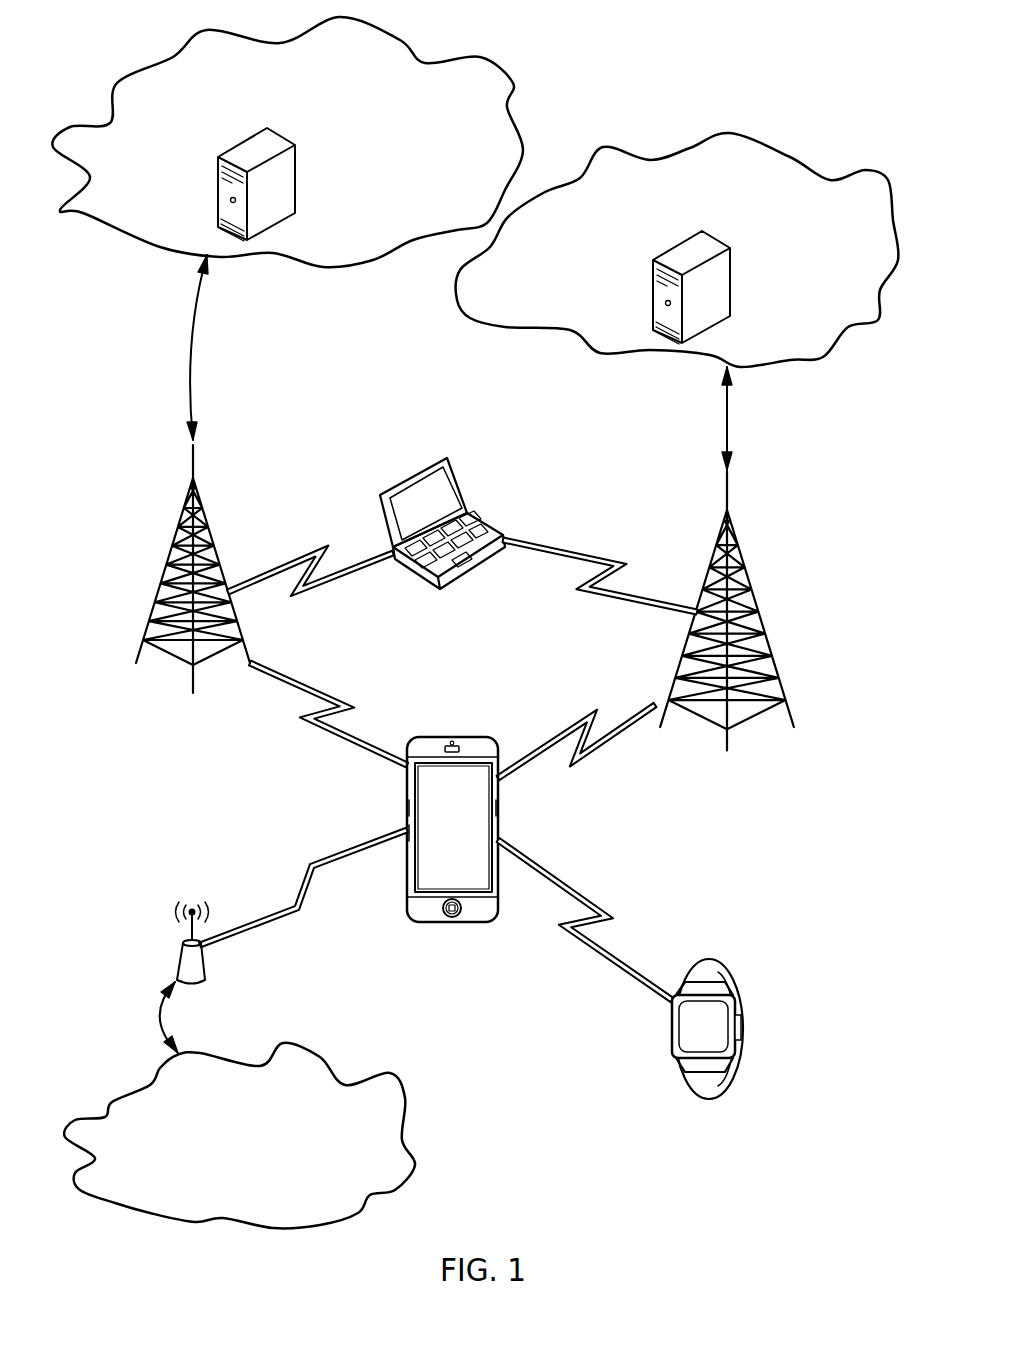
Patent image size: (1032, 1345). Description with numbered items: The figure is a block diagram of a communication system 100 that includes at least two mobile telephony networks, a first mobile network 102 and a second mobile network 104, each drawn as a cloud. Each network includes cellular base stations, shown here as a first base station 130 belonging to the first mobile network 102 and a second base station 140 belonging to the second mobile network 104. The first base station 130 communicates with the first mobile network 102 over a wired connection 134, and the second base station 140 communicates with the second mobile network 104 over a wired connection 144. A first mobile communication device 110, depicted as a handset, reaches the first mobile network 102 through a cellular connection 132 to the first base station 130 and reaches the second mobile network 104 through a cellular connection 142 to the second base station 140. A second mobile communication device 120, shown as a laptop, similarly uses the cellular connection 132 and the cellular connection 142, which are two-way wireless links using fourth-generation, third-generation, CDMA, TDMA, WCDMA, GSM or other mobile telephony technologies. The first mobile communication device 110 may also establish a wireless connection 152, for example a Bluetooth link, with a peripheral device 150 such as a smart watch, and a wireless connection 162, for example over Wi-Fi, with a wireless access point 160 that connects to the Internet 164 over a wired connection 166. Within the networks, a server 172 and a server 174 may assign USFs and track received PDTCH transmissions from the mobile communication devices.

The communication system 100 is at (851, 50).
The first mobile network 102 is at (404, 40).
The second mobile network 104 is at (718, 133).
The first mobile communication device 110 is at (497, 805).
The second mobile communication device 120 is at (385, 490).
The first base station 130 is at (172, 570).
The cellular connection 132 is at (320, 549).
The wired connection 134 is at (188, 333).
The second base station 140 is at (717, 538).
The cellular connection 142 is at (552, 550).
The wired connection 144 is at (727, 415).
The peripheral device 150 is at (720, 958).
The wireless connection 152 is at (578, 897).
The wireless access point 160 is at (178, 957).
The wireless connection 162 is at (294, 872).
The Internet 164 is at (402, 1080).
The wired connection 166 is at (172, 1028).
The server 172 is at (298, 178).
The server 174 is at (730, 275).